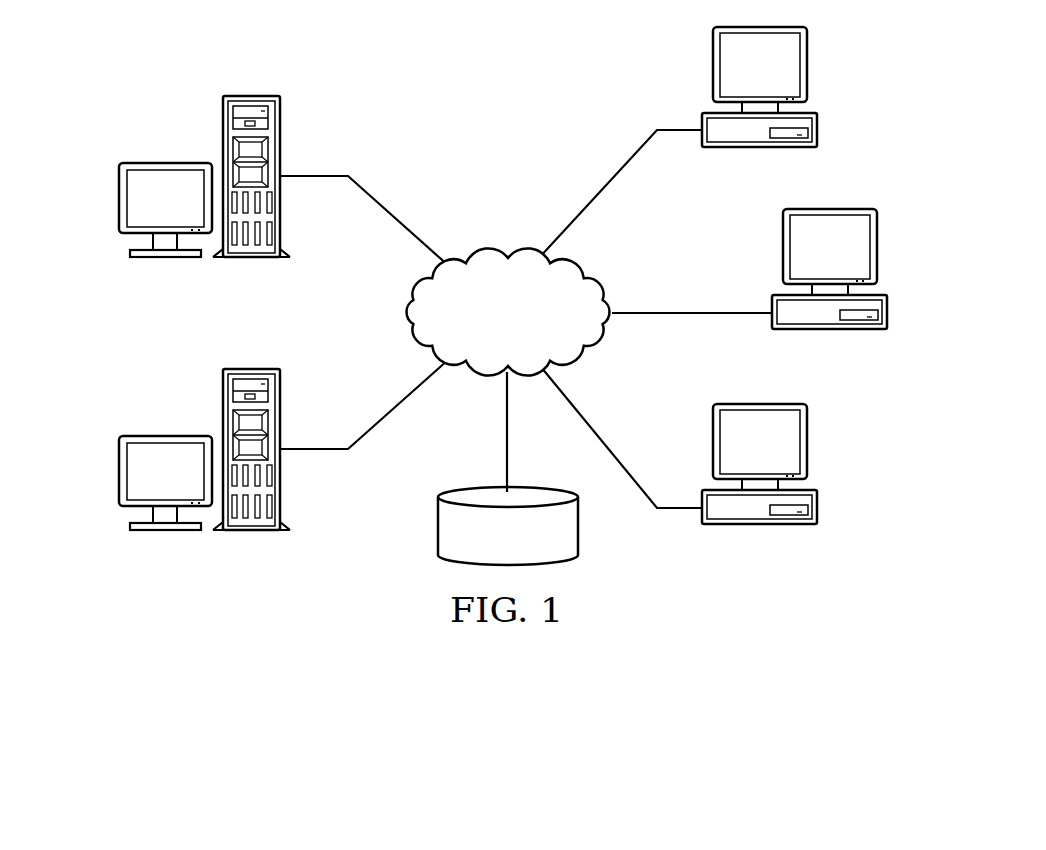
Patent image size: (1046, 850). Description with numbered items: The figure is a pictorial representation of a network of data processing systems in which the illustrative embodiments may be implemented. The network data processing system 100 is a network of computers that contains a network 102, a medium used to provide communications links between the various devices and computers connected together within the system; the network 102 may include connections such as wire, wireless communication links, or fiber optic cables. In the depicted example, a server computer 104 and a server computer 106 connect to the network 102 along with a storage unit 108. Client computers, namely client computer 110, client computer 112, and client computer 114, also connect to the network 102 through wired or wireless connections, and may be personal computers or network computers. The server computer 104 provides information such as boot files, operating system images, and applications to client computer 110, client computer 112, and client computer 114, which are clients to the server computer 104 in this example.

The network data processing system 100 is at (354, 66).
The network 102 is at (505, 257).
The server computer 104 is at (118, 193).
The server computer 106 is at (167, 466).
The storage unit 108 is at (438, 523).
The client computer 110 is at (818, 118).
The client computer 112 is at (867, 287).
The client computer 114 is at (797, 483).